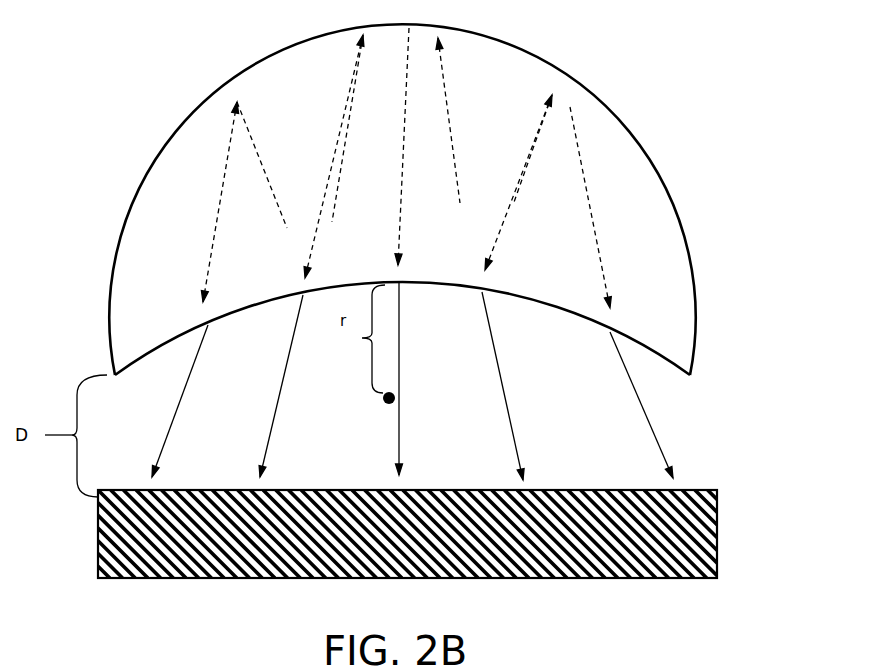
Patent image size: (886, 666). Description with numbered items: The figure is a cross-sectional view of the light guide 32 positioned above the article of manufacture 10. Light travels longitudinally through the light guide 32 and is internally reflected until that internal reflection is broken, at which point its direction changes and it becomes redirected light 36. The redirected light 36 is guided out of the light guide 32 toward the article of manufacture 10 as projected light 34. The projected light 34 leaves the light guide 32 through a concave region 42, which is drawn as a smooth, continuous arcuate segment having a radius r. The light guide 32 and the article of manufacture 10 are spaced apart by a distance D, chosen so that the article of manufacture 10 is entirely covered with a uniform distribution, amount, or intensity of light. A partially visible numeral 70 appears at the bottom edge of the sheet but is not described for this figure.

The article of manufacture 10 is at (763, 530).
The light guide 32 is at (716, 222).
The projected light 34 is at (647, 417).
The redirected light 36 is at (255, 150).
The concave region 42 is at (448, 366).
The reference numeral (partially visible) 70 is at (596, 660).